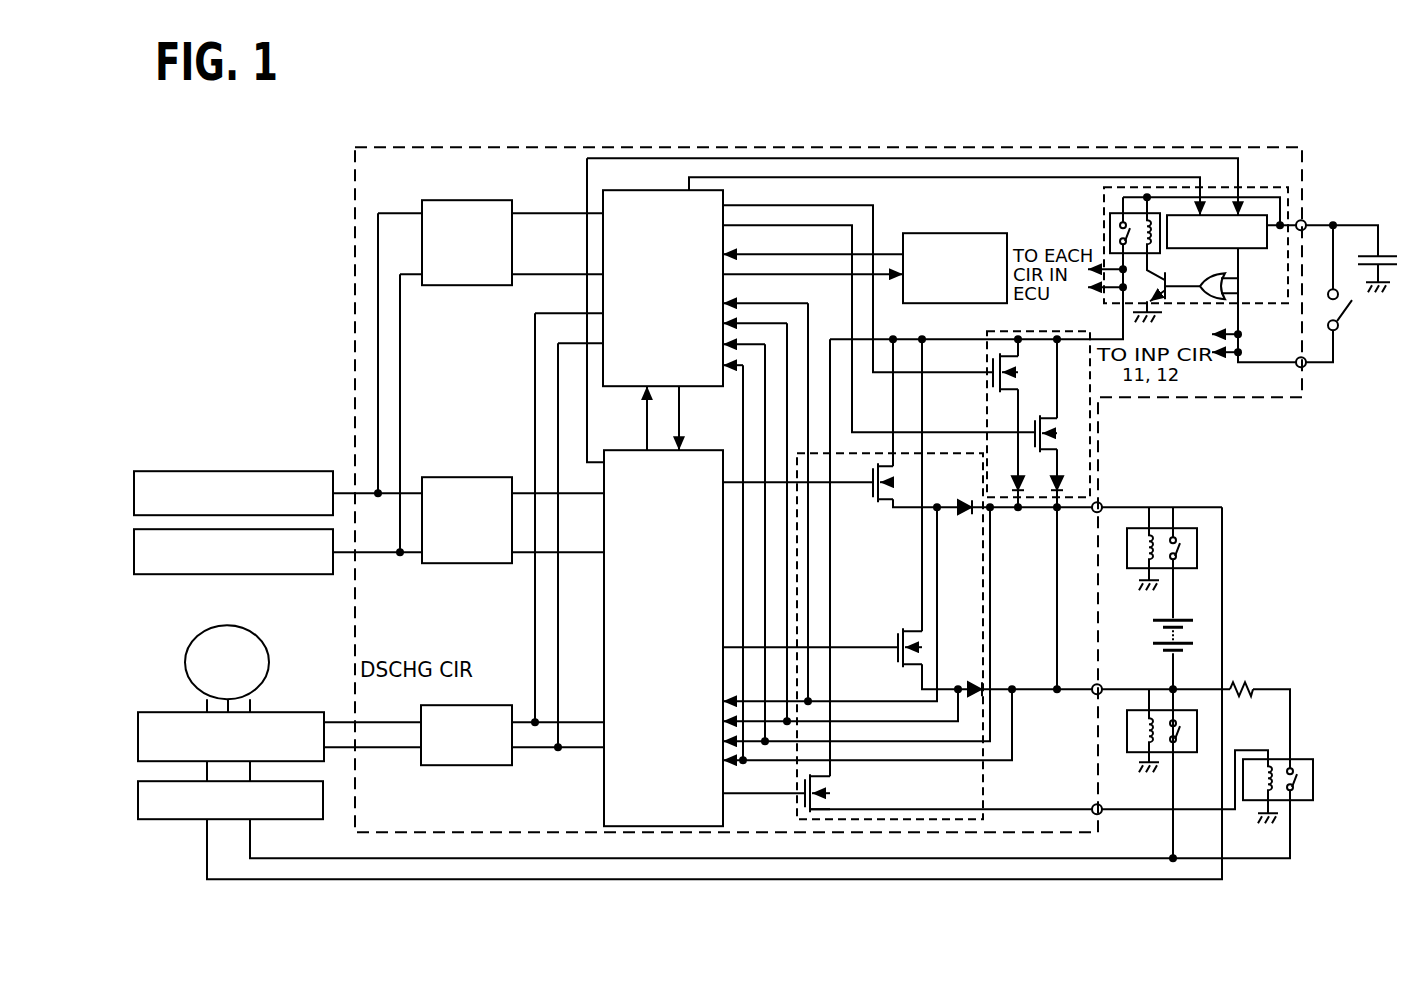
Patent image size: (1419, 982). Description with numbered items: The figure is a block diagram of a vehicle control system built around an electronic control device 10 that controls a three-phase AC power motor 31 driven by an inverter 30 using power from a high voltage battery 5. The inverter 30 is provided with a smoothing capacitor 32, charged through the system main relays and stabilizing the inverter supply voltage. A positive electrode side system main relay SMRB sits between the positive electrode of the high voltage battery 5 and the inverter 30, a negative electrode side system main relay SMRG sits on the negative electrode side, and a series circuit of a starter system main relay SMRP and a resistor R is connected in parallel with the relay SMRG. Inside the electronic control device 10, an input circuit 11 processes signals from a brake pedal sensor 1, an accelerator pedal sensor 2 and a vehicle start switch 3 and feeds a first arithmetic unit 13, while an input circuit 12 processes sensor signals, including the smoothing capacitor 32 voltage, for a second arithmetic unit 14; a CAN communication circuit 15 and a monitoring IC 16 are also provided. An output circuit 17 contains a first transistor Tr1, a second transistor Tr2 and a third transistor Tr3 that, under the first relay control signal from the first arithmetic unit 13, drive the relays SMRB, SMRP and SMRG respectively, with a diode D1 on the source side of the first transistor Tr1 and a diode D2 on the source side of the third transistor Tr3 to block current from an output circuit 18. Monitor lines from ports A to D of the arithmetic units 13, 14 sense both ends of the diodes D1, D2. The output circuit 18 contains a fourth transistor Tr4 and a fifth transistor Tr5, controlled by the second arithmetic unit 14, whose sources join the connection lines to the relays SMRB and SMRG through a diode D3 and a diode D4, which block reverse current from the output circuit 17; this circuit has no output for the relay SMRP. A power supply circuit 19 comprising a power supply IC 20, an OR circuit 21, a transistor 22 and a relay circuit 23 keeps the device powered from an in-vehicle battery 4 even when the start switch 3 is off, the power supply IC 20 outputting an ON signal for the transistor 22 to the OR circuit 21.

The brake pedal sensor 1 is at (300, 471).
The accelerator pedal sensor 2 is at (290, 574).
The vehicle start switch 3 is at (1353, 318).
The in-vehicle battery 4 is at (1385, 256).
The high voltage battery 5 is at (1156, 640).
The electronic control device 10 is at (945, 147).
The input circuit 11 is at (467, 477).
The input circuit 12 is at (467, 285).
The first arithmetic unit 13 is at (700, 450).
The second arithmetic unit 14 is at (725, 196).
The CAN communication circuit 15 is at (503, 705).
The monitoring IC 16 is at (967, 233).
The output circuit 17 is at (975, 565).
The output circuit 18 is at (987, 401).
The power supply circuit 19 is at (1262, 305).
The power supply IC 20 is at (1255, 248).
The OR circuit 21 is at (1203, 298).
The transistor 22 is at (1168, 279).
The relay circuit 23 is at (1110, 231).
The inverter 30 is at (302, 712).
The power motor 31 is at (330, 692).
The smoothing capacitor 32 is at (183, 819).
The first transistor Tr1 is at (872, 504).
The second transistor Tr2 is at (804, 787).
The third transistor Tr3 is at (897, 644).
The fourth transistor Tr4 is at (992, 364).
The fifth transistor Tr5 is at (1033, 418).
The diode D1 is at (962, 499).
The diode D2 is at (968, 681).
The diode D3 is at (1013, 475).
The diode D4 is at (1062, 475).
The resistor R is at (1246, 682).
The positive electrode side system main relay SMRB is at (1135, 568).
The negative electrode side system main relay SMRG is at (1135, 752).
The starter system main relay SMRP is at (1313, 759).